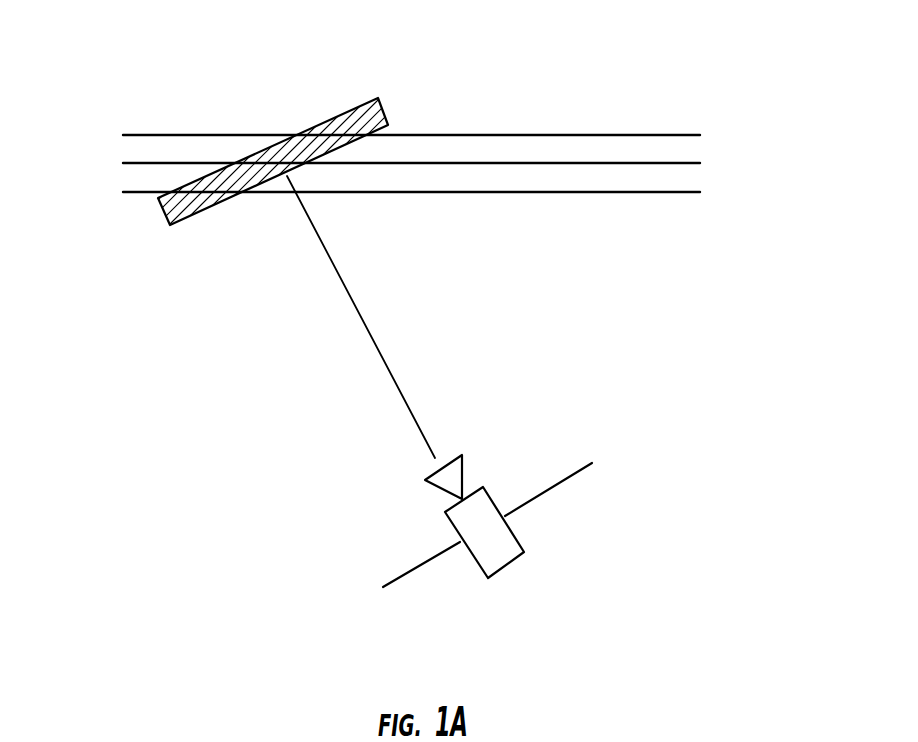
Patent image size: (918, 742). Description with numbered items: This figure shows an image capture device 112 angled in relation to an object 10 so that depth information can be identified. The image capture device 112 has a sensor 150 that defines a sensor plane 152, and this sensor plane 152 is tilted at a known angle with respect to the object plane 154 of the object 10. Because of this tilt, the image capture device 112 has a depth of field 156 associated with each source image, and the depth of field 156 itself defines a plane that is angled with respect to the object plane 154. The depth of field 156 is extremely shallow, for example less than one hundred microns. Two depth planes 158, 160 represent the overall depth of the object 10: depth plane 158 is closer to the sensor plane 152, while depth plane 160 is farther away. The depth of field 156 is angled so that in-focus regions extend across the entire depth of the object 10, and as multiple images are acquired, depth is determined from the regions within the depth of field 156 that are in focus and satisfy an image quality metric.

The object 10 is at (674, 260).
The image capture device 112 is at (527, 545).
The sensor 150 is at (507, 518).
The sensor plane 152 is at (592, 463).
The object plane 154 is at (683, 162).
The depth of field 156 is at (386, 111).
The depth plane 158 is at (141, 192).
The depth plane 160 is at (147, 134).